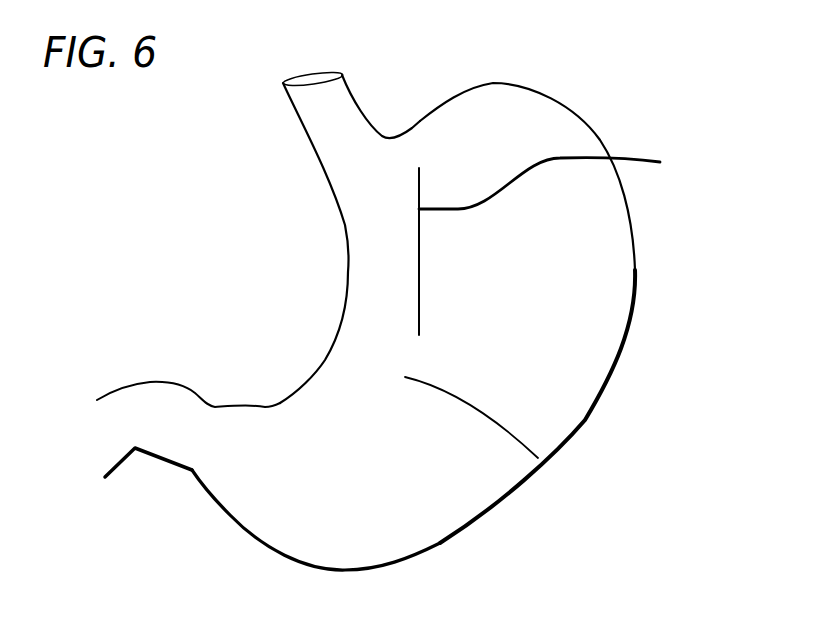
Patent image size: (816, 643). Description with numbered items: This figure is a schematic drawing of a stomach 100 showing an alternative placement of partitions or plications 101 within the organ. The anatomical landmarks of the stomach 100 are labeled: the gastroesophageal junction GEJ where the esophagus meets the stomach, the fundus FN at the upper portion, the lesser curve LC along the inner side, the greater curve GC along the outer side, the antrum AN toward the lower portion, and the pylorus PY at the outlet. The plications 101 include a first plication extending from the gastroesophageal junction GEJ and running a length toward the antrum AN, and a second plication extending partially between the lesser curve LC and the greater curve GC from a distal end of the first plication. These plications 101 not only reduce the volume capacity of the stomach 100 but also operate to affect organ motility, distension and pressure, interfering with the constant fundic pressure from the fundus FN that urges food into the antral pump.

The stomach 100 is at (398, 312).
The plication 101 is at (552, 306).
The gastroesophageal junction GEJ is at (390, 128).
The fundus FN is at (568, 108).
The lesser curve LC is at (348, 272).
The greater curve GC is at (588, 413).
The antrum AN is at (442, 543).
The pylorus PY is at (193, 390).